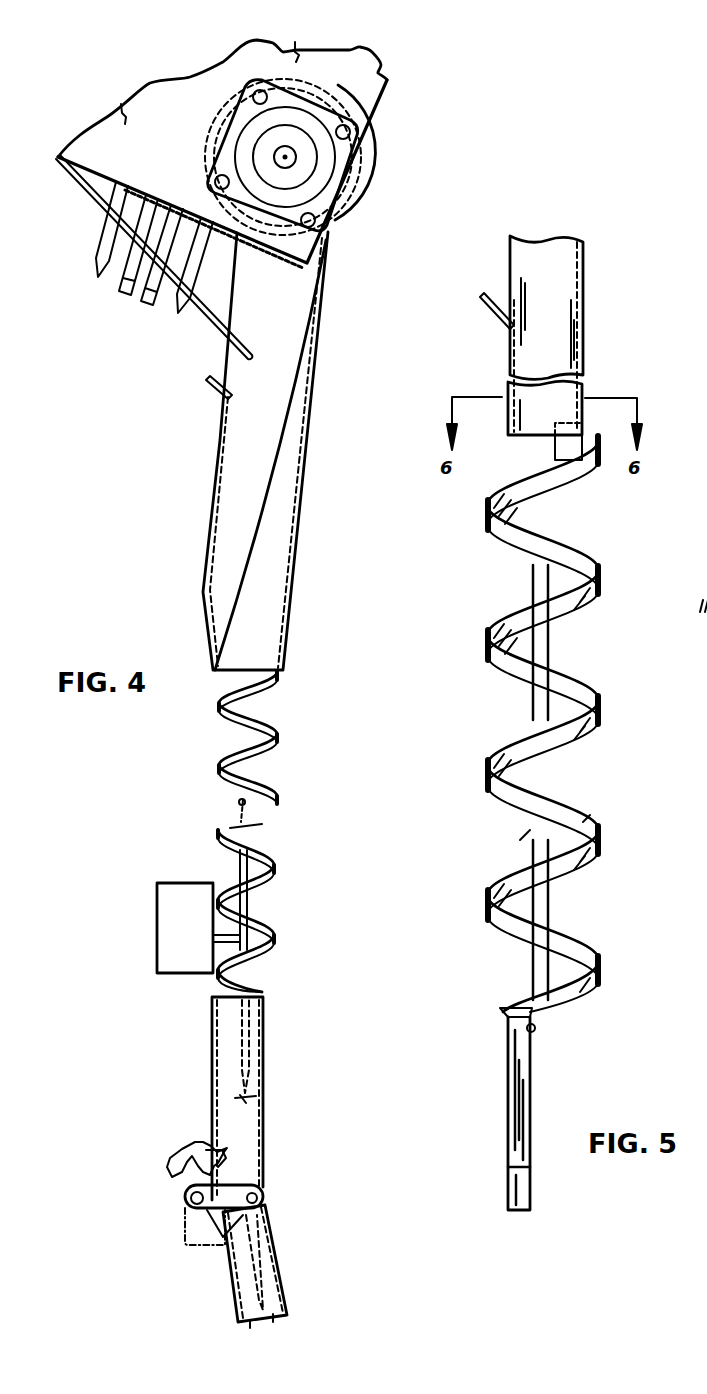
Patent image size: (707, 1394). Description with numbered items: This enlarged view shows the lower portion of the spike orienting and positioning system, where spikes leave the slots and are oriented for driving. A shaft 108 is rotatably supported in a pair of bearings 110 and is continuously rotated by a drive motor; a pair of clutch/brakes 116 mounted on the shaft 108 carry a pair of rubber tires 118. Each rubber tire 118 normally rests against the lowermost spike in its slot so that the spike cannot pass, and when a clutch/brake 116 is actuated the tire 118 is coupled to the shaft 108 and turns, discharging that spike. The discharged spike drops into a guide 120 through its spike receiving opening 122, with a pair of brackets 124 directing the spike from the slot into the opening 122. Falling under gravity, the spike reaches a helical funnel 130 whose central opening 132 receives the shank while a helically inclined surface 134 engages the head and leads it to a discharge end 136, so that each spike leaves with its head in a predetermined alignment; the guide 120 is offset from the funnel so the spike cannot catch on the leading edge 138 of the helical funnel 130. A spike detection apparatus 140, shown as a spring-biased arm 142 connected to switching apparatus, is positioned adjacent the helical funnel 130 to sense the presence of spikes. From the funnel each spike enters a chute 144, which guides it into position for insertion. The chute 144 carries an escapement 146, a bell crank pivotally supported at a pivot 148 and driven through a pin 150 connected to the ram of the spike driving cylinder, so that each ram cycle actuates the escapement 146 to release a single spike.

In FIG. 4, the shaft 108 is at (305, 155).
In FIG. 4, the bearings 110 is at (325, 112).
In FIG. 4, the clutch/brakes 116 is at (223, 127).
In FIG. 4, the rubber tires 118 is at (227, 100).
In FIG. 4, the guide 120 is at (212, 537).
In FIG. 5, the guide 120 is at (586, 298).
In FIG. 4, the spike receiving opening 122 is at (222, 377).
In FIG. 5, the spike receiving opening 122 is at (505, 297).
In FIG. 4, the brackets 124 is at (100, 202).
In FIG. 4, the helical funnel 130 is at (216, 773).
In FIG. 5, the helical funnel 130 is at (484, 752).
In FIG. 5, the central opening 132 is at (520, 837).
In FIG. 5, the helically inclined surface 134 is at (583, 822).
In FIG. 5, the discharge end 136 is at (535, 1030).
In FIG. 5, the leading edge 138 is at (555, 438).
In FIG. 4, the spike detection apparatus 140 is at (158, 882).
In FIG. 4, the spring-biased arm 142 is at (237, 938).
In FIG. 4, the chute 144 is at (212, 1040).
In FIG. 4, the escapement 146 is at (170, 1152).
In FIG. 4, the pivot 148 is at (188, 1192).
In FIG. 4, the pin 150 is at (263, 1192).